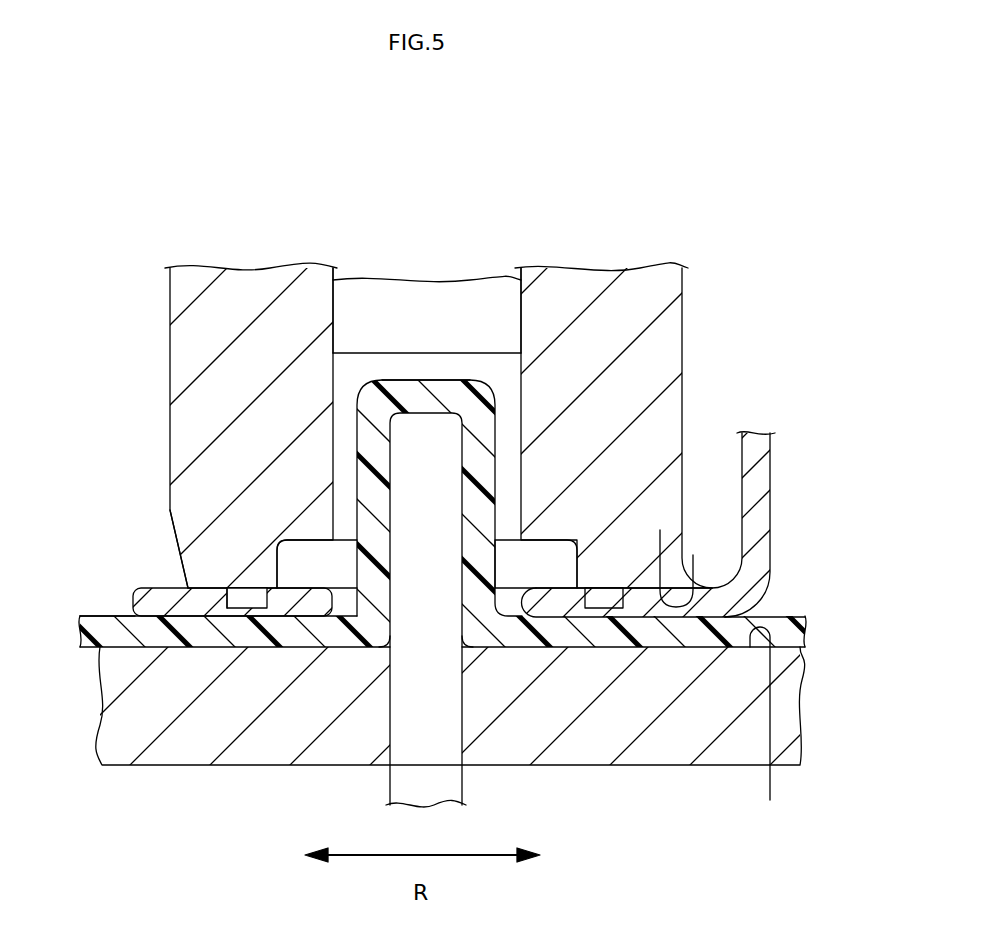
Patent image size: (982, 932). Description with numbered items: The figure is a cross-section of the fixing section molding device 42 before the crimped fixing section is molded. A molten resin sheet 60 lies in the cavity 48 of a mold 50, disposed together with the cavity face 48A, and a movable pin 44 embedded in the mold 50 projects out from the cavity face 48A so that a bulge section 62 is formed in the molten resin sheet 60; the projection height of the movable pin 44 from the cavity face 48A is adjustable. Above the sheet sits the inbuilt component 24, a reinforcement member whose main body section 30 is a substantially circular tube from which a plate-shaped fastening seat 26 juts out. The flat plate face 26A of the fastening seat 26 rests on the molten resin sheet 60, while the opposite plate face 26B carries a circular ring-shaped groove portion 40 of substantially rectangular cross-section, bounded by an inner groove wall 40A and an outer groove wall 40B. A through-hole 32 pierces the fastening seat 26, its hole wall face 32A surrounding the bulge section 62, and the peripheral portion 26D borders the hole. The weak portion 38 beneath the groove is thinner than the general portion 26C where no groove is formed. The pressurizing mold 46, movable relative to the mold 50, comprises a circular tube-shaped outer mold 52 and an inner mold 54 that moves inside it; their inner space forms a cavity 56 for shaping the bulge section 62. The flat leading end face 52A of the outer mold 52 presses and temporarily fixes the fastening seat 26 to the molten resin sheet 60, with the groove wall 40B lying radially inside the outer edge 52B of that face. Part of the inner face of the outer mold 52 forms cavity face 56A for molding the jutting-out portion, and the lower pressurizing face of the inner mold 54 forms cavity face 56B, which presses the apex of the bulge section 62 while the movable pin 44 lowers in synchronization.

The inbuilt component 24 is at (742, 463).
The fastening seat 26 is at (153, 588).
The one plate face 26A is at (185, 618).
The another plate face 26B is at (177, 586).
The general portion 26C is at (660, 588).
The peripheral portion 26D is at (537, 588).
The main body section 30 is at (744, 440).
The through-hole 32 is at (491, 466).
The hole wall face 32A is at (353, 597).
The weak portion 38 is at (230, 632).
The groove portion 40 is at (248, 606).
The one groove wall 40A is at (262, 600).
The another groove wall 40B is at (227, 590).
The fixing section molding device 42 is at (491, 466).
The movable pin 44 is at (462, 780).
The pressurizing mold 46 is at (491, 466).
The cavity 48 is at (789, 730).
The cavity face 48A is at (789, 730).
The mold 50 is at (700, 768).
The outer mold 52 is at (688, 312).
The leading end face 52A is at (640, 590).
The outer edge 52B is at (682, 590).
The inner mold 54 is at (432, 280).
The cavity 56 is at (467, 366).
The cavity face 56A is at (528, 540).
The cavity face 56B is at (370, 358).
The molten resin sheet 60 is at (118, 616).
The bulge section 62 is at (479, 388).